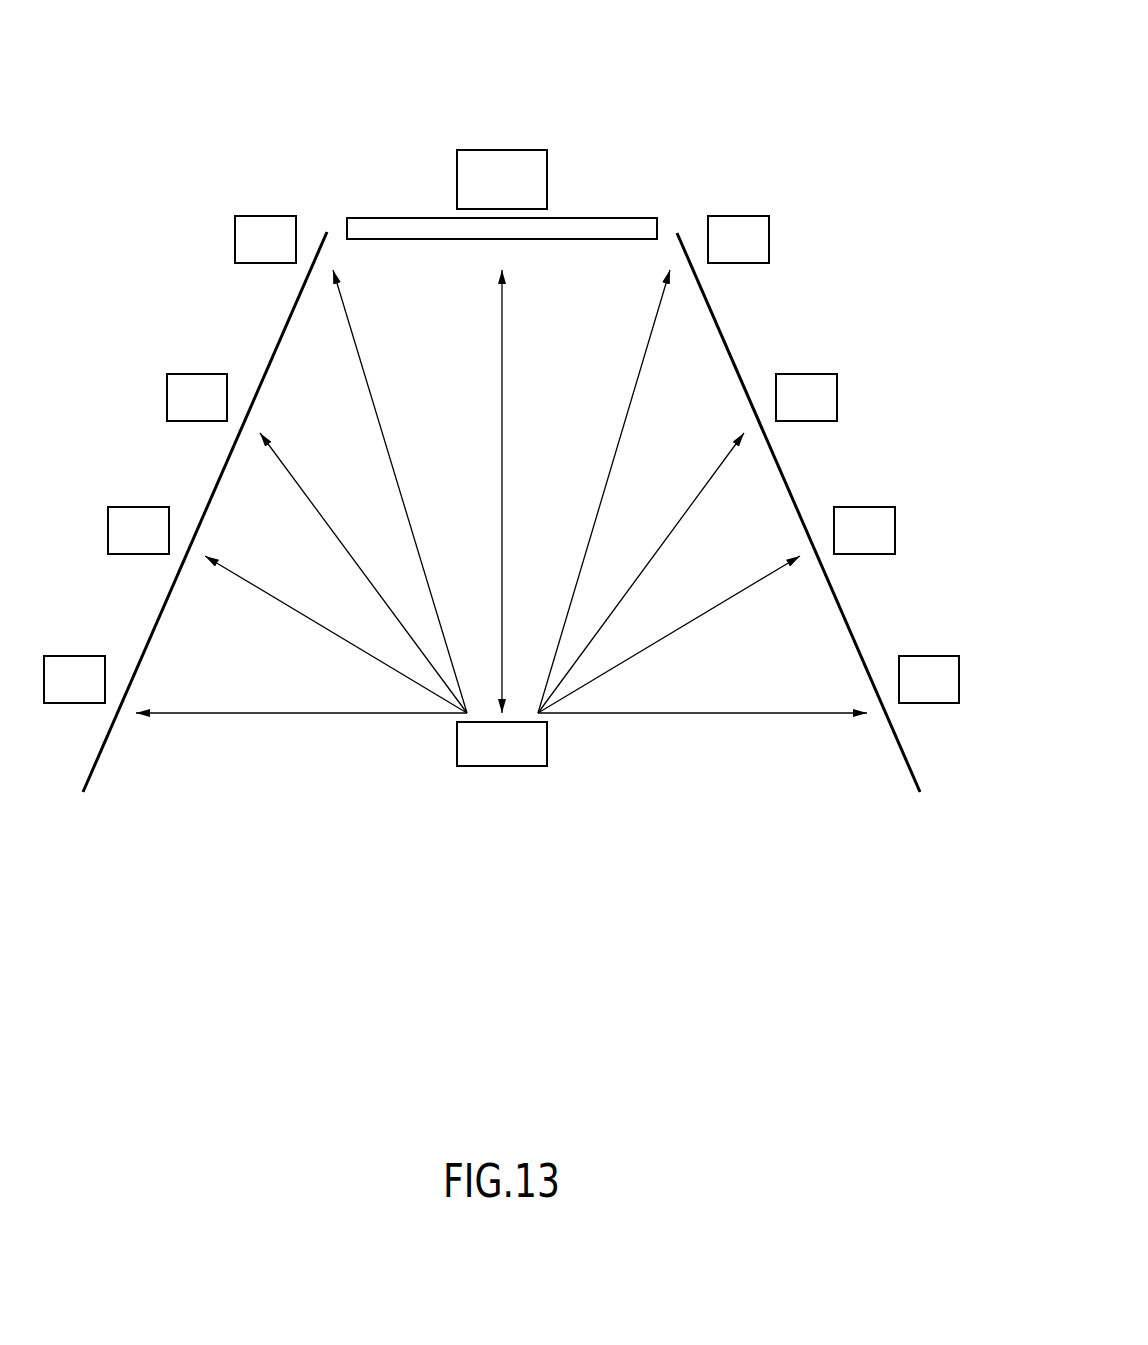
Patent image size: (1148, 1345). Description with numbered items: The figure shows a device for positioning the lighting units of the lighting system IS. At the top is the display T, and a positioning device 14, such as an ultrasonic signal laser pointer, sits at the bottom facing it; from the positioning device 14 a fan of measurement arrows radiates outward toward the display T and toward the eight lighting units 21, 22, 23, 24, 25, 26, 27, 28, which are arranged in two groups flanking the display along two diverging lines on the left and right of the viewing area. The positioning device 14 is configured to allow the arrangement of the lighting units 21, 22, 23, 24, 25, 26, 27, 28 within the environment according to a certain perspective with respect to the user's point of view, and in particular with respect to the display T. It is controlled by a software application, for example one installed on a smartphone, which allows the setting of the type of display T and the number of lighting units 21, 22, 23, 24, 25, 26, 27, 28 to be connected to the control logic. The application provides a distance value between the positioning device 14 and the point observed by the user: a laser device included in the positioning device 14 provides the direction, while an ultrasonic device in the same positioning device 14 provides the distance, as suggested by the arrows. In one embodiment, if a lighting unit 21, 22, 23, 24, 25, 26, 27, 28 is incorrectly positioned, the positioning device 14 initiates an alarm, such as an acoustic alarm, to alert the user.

The positioning device 14 is at (495, 743).
The lighting unit 21 is at (262, 216).
The lighting unit 22 is at (742, 216).
The lighting unit 23 is at (193, 374).
The lighting unit 24 is at (810, 374).
The lighting unit 25 is at (135, 507).
The lighting unit 26 is at (868, 507).
The lighting unit 27 is at (82, 656).
The lighting unit 28 is at (925, 656).
The display T is at (497, 165).
The lighting system IS is at (740, 95).